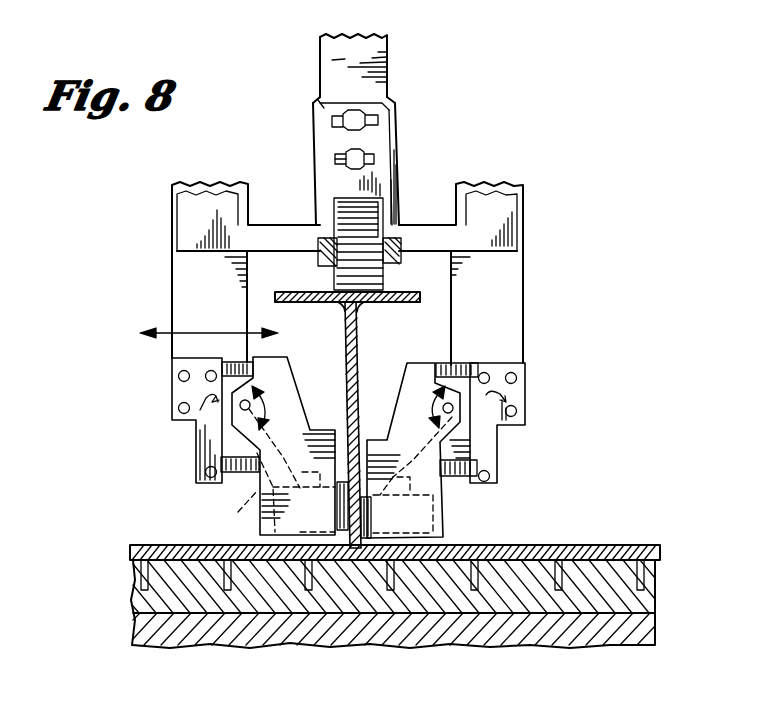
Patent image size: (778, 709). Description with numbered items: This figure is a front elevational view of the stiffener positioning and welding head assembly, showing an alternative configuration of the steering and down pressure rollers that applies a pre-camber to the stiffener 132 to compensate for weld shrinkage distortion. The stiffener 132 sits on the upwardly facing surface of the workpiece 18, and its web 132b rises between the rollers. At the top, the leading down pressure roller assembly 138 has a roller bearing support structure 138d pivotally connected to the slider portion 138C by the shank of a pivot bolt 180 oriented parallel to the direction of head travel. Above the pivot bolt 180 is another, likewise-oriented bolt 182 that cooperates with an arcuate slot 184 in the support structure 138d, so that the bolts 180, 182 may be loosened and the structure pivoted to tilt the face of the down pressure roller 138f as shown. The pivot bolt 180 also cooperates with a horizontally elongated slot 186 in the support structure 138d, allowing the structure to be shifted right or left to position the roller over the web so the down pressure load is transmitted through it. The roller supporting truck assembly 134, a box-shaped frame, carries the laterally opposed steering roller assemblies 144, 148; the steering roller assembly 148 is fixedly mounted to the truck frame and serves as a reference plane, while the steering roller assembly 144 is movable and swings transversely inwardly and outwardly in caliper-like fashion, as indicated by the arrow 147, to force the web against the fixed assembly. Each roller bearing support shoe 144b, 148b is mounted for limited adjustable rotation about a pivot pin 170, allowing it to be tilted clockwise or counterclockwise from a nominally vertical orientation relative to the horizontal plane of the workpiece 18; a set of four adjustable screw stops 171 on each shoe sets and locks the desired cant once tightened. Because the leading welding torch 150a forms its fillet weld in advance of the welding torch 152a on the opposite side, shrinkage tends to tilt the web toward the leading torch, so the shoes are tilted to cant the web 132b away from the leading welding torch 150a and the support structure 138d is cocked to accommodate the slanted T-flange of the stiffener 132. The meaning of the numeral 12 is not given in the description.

The leading down pressure roller assembly 138 is at (396, 77).
The slider portion 138C is at (378, 90).
The roller bearing support structure 138d is at (384, 149).
The bolt 182 is at (318, 100).
The arcuate slot 184 is at (332, 122).
The pivot bolt 180 is at (335, 156).
The horizontally elongated slot 186 is at (342, 168).
The roller supporting truck assembly 134 is at (508, 217).
The down pressure roller 138f is at (387, 274).
The stiffener 132 is at (302, 284).
The web 132b is at (356, 334).
The arrow 147 is at (155, 330).
The steering roller assembly 144 is at (170, 348).
The steering roller assembly 148 is at (526, 332).
The roller bearing support shoe 144b is at (290, 386).
The roller bearing support shoe 148b is at (412, 380).
The pivot pin 170 is at (223, 420).
The adjustable screw stop 171 is at (253, 366).
The welding torch 152a is at (265, 492).
The leading welding torch 150a is at (455, 488).
The workpiece 18 is at (605, 545).
The belt body 12 is at (675, 565).